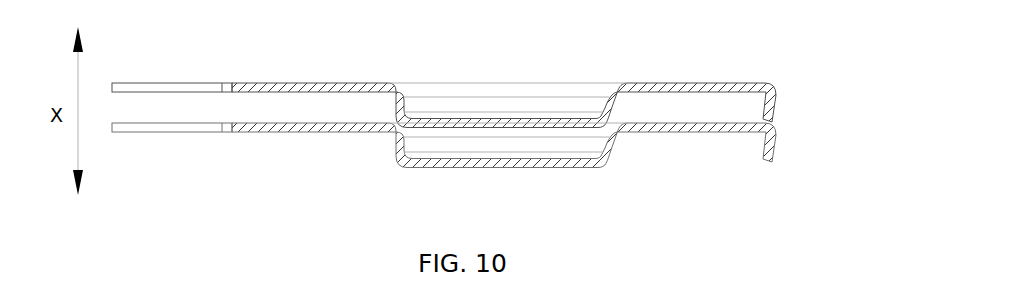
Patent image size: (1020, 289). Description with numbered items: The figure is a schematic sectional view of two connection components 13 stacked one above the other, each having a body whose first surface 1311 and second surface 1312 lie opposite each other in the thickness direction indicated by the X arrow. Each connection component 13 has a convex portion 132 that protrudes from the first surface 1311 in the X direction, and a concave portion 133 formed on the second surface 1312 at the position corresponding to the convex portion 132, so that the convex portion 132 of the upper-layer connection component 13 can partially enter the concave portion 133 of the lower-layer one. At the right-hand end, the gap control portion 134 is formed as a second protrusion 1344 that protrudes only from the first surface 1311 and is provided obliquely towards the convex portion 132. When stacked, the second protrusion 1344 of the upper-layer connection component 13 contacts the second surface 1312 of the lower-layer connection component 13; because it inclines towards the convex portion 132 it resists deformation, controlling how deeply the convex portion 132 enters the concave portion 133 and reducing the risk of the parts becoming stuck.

The connection component 13 is at (205, 82).
The first surface 1311 is at (197, 102).
The second surface 1312 is at (295, 70).
The convex portion 132 is at (612, 150).
The concave portion 133 is at (493, 82).
The gap control portion 134 is at (798, 178).
The second protrusion 1344 is at (775, 101).